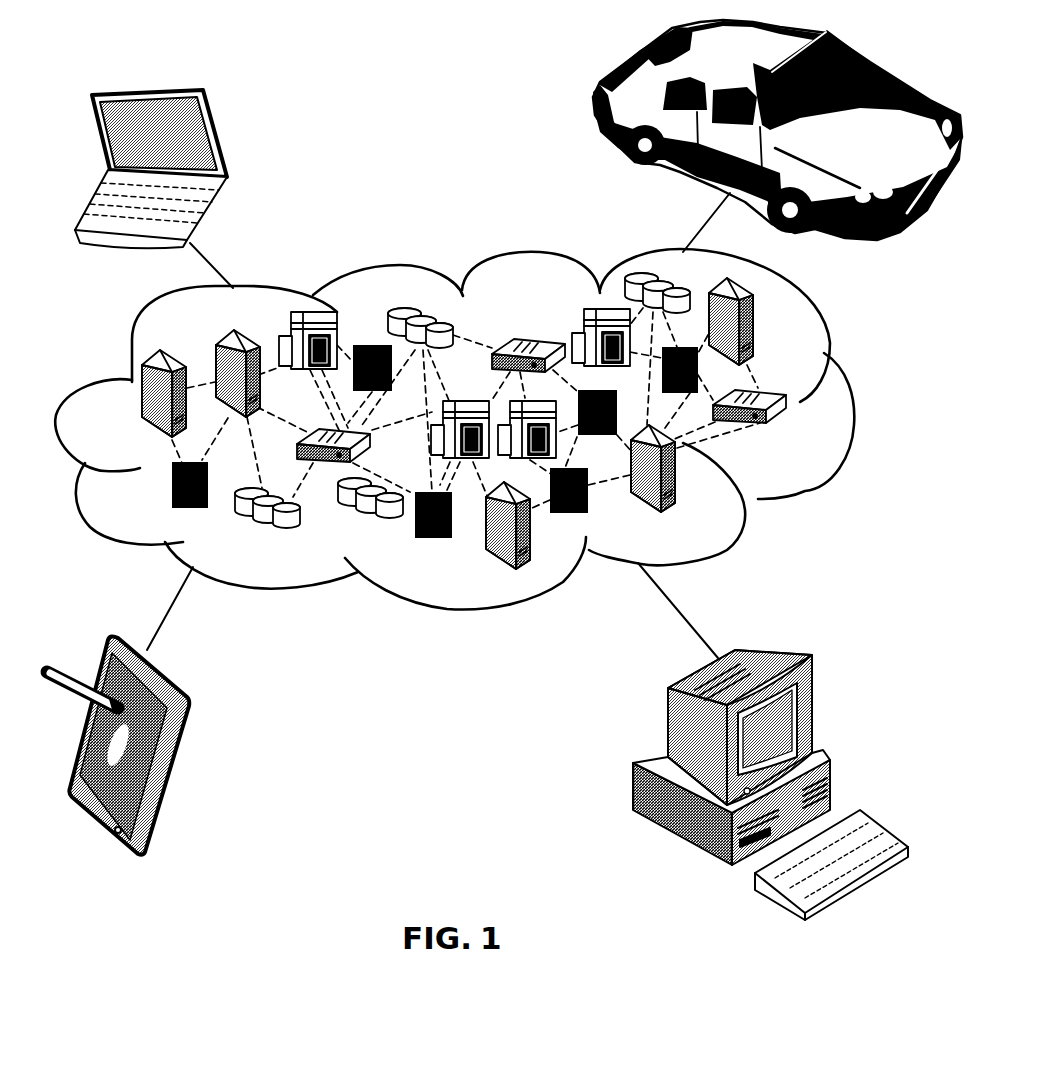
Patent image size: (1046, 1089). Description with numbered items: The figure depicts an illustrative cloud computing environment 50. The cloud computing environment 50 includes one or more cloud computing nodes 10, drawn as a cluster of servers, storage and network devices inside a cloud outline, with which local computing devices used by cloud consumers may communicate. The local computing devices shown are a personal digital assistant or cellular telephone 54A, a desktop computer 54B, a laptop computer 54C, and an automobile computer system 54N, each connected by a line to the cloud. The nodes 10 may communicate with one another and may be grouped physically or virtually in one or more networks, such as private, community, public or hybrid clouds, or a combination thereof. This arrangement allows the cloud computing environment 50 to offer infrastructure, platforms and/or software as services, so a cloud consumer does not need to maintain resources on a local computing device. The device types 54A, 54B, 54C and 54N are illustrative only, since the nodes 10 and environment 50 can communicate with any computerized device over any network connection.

The cloud computing nodes 10 is at (802, 438).
The cloud computing environment 50 is at (848, 403).
The personal digital assistant (PDA) or cellular telephone 54A is at (180, 733).
The desktop computer 54B is at (777, 652).
The laptop computer 54C is at (217, 137).
The automobile computer system 54N is at (593, 102).